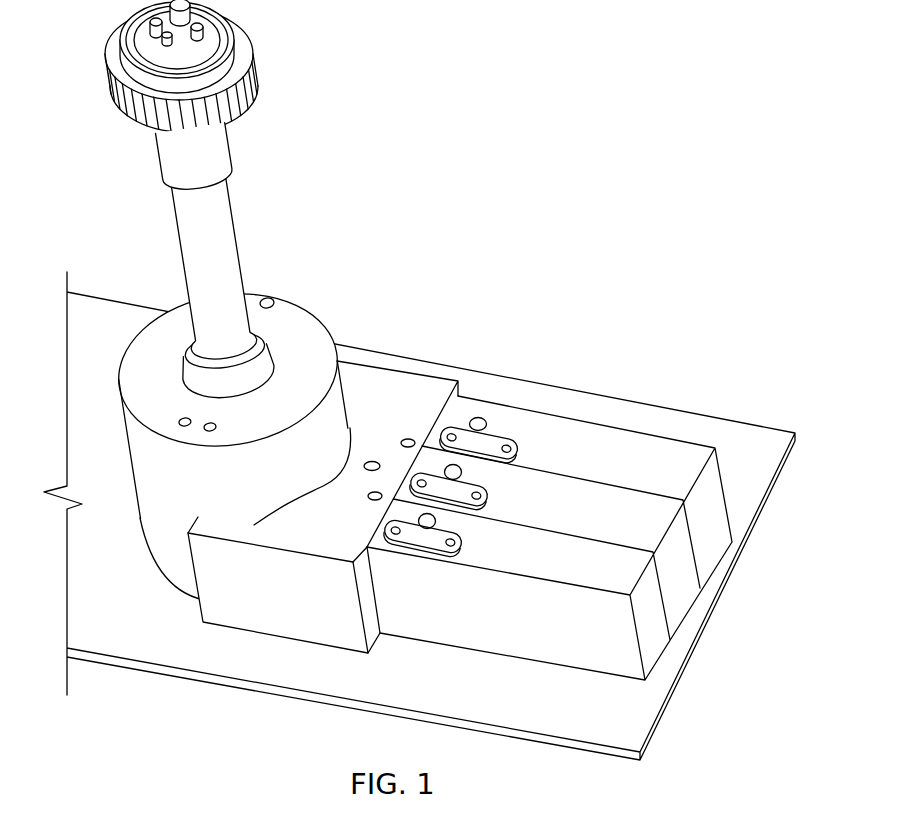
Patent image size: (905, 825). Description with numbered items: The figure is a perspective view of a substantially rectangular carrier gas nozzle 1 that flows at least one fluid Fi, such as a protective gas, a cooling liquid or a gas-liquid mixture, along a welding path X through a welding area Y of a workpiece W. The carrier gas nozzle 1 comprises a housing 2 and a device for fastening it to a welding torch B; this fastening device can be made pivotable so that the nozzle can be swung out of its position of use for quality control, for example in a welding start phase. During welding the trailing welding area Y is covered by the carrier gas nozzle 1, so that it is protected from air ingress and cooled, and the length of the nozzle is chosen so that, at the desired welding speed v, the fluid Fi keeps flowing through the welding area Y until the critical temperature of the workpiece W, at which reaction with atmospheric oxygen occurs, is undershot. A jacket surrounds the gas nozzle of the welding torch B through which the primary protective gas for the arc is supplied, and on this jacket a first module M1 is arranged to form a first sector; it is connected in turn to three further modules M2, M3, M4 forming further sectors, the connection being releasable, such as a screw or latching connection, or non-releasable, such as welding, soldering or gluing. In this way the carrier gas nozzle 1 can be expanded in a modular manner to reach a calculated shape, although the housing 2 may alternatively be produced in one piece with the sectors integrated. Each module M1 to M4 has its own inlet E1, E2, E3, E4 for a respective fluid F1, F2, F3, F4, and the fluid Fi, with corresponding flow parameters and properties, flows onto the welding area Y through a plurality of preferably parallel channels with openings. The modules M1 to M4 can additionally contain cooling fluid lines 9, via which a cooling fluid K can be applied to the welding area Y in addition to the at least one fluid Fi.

The carrier gas nozzle 1 is at (612, 158).
The housing 2 is at (413, 388).
The cooling fluid lines 9 is at (408, 440).
The welding torch B is at (219, 262).
The workpiece W is at (785, 464).
The welding path X is at (137, 506).
The welding area Y is at (690, 637).
The welding speed v is at (138, 517).
The cooling fluid K is at (403, 516).
The inlet E1 is at (375, 462).
The inlet E2 is at (437, 520).
The inlet E3 is at (462, 473).
The inlet E4 is at (487, 421).
The fluid F1 is at (376, 486).
The fluid F2 is at (427, 477).
The fluid F3 is at (454, 432).
The fluid F4 is at (477, 385).
The fluid Fi is at (378, 175).
The module M1 is at (443, 366).
The module M2 is at (597, 582).
The module M3 is at (595, 500).
The module M4 is at (590, 438).